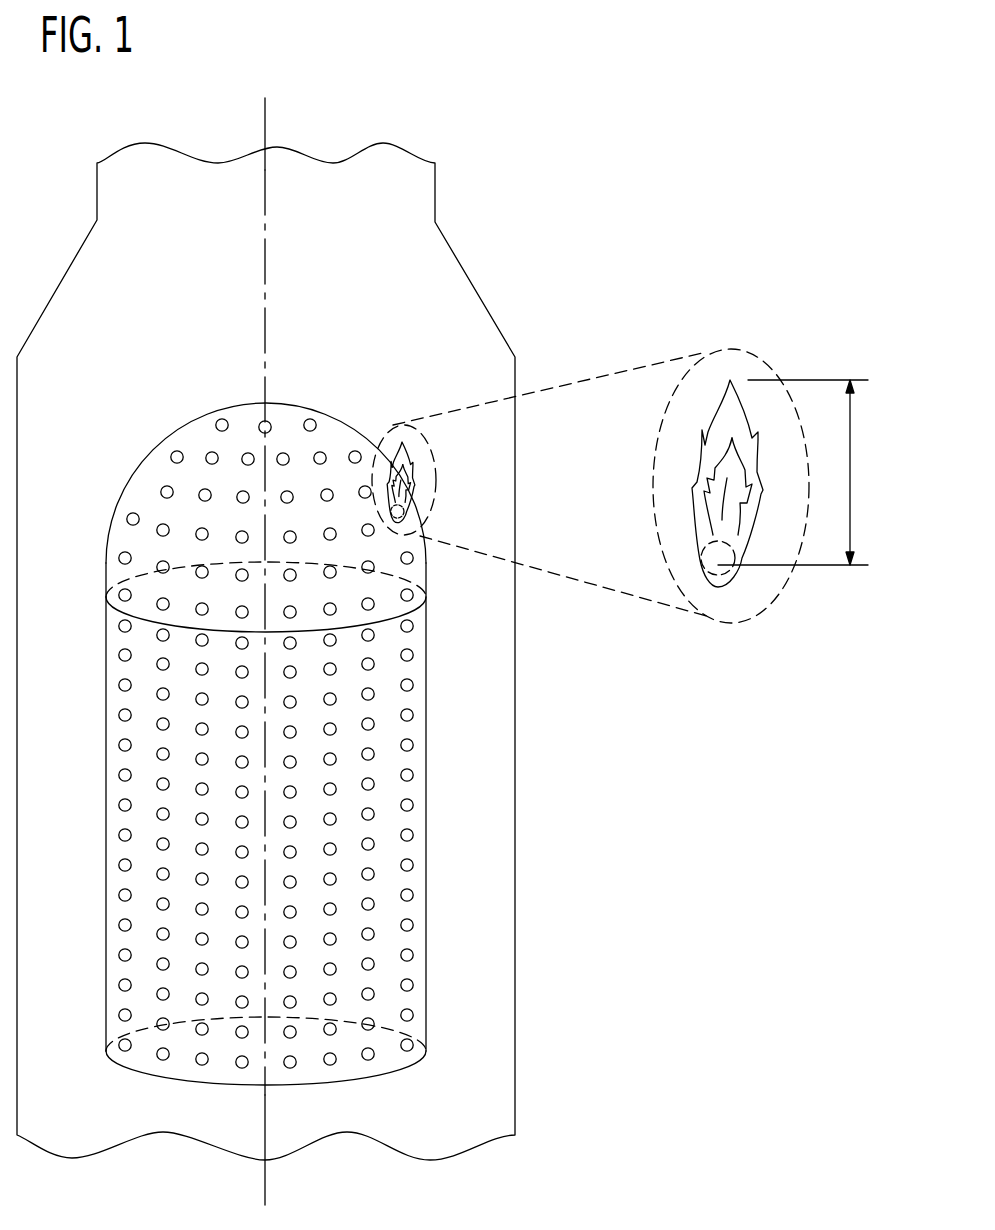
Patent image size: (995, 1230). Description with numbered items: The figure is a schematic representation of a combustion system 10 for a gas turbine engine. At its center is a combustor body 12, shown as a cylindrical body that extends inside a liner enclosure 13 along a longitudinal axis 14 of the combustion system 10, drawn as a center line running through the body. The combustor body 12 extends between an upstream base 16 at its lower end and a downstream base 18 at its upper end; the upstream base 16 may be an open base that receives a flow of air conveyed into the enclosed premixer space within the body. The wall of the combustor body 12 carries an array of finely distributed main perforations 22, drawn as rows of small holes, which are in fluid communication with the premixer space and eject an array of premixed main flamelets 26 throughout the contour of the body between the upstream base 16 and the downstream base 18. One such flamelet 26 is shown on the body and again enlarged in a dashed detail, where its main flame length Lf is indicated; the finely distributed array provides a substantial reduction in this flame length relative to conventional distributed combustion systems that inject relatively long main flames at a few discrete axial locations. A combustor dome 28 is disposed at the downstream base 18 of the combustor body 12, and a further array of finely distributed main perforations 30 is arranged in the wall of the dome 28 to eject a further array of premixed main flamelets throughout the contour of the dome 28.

The combustion system 10 is at (573, 293).
The combustor body 12 is at (275, 725).
The liner enclosure 13 is at (515, 815).
The longitudinal axis 14 is at (267, 320).
The upstream base 16 is at (446, 1048).
The downstream base 18 is at (447, 610).
The main perforations 22 is at (158, 722).
The premixed main flamelets 26 is at (412, 460).
The combustor dome 28 is at (300, 408).
The further array of finely distributed main perforations 30 is at (165, 486).